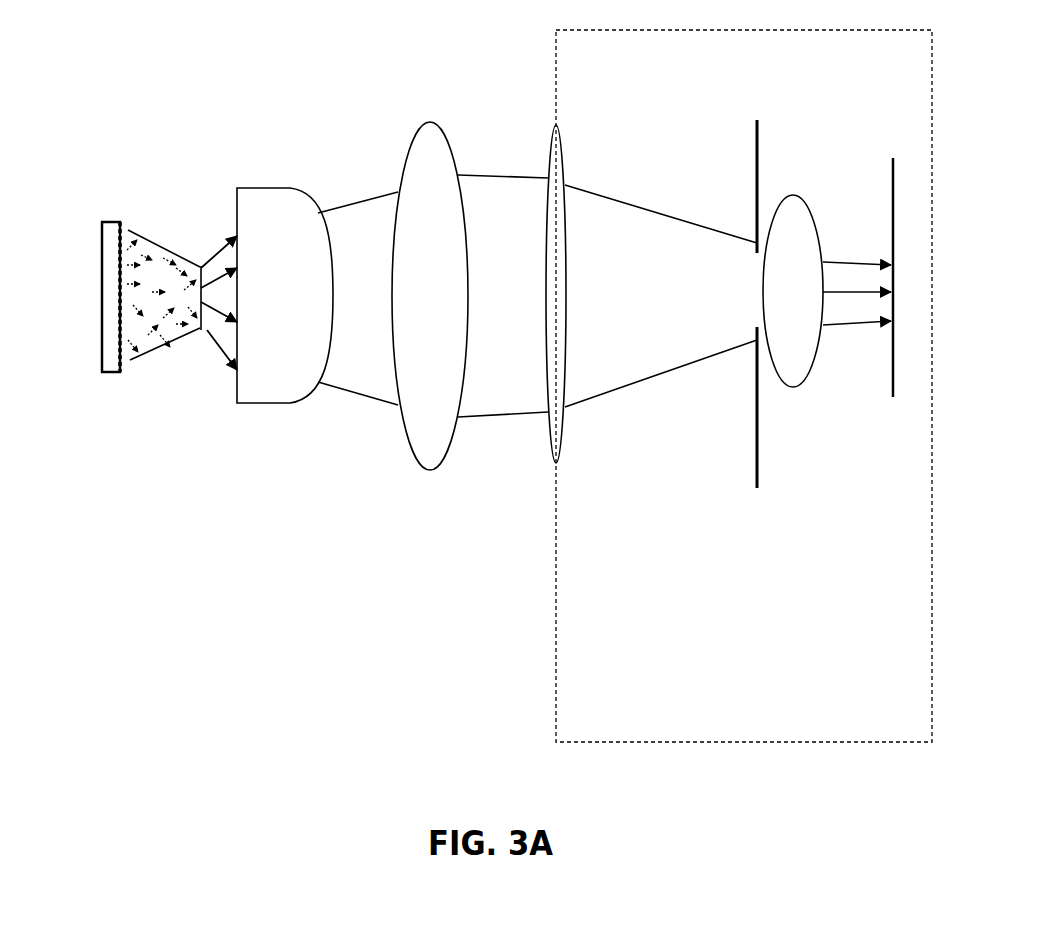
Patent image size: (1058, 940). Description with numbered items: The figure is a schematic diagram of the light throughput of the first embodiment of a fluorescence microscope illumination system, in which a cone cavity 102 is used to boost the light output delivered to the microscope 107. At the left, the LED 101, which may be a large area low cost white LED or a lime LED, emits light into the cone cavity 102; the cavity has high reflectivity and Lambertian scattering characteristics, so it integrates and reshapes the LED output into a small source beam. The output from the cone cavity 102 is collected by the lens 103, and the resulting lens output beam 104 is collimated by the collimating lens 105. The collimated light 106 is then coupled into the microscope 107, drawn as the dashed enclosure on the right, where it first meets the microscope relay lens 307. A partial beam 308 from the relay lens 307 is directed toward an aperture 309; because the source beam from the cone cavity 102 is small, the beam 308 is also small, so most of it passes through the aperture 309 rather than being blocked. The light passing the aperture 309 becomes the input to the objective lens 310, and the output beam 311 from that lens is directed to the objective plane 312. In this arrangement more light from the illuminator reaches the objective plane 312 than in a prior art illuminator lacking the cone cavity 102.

The LED 101 is at (107, 380).
The cone cavity 102 is at (147, 362).
The lens 103 is at (260, 407).
The lens output beam 104 is at (362, 400).
The collimating lens 105 is at (443, 458).
The collimated light 106 is at (503, 433).
The microscope 107 is at (744, 386).
The microscope relay lens 307 is at (568, 447).
The partial beam 308 is at (741, 342).
The aperture 309 is at (750, 485).
The objective lens 310 is at (788, 387).
The output beam 311 is at (868, 330).
The objective plane 312 is at (893, 350).